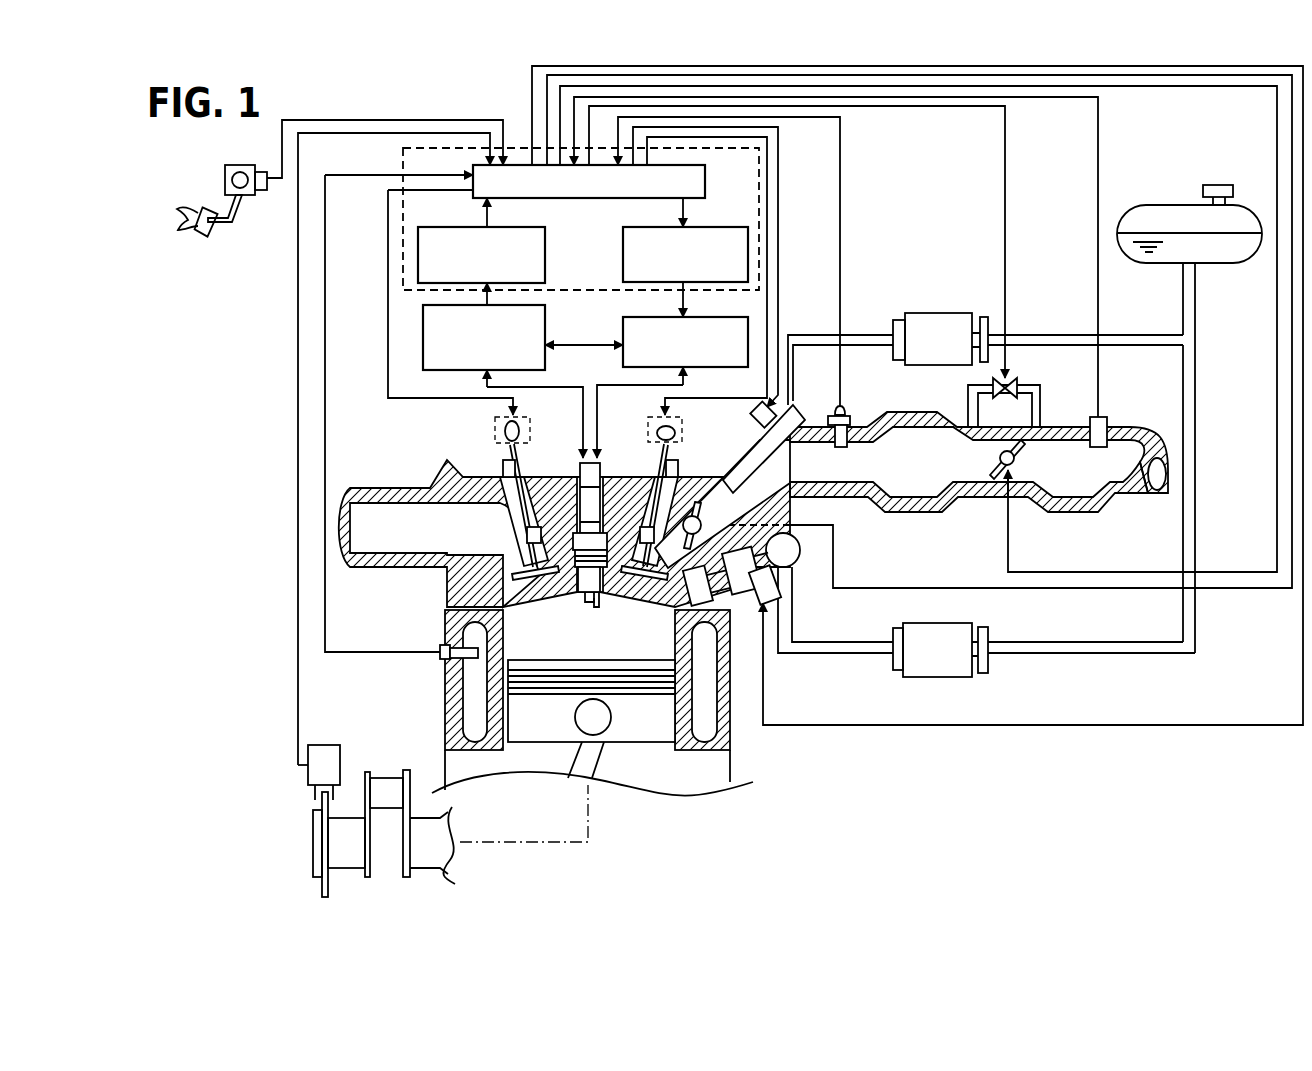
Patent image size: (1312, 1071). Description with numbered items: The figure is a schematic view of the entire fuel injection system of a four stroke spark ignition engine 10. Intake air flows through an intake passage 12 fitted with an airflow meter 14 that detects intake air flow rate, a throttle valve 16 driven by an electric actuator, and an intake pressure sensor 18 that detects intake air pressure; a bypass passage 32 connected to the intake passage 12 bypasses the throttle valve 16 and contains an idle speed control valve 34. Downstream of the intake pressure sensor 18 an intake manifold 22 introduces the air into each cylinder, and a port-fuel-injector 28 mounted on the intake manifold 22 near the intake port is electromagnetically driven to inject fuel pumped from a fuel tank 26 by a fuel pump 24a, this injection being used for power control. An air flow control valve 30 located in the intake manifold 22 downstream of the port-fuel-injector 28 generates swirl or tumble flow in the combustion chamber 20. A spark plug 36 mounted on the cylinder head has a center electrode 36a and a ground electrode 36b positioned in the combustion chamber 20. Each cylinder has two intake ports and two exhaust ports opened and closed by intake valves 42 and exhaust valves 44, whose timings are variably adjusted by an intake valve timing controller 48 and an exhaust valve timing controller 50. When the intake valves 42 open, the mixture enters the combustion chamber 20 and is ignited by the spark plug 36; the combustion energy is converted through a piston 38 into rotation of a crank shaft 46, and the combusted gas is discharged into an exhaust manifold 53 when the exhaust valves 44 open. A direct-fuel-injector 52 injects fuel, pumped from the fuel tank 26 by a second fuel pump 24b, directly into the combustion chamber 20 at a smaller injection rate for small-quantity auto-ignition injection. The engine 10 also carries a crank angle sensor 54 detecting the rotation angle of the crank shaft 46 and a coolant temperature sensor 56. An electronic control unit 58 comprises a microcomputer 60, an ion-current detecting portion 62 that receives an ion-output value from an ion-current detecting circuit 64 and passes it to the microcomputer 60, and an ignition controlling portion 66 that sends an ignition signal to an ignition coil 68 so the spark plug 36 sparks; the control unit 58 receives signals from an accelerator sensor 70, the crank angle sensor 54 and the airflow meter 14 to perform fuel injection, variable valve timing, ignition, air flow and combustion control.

The engine 10 is at (737, 807).
The intake passage 12 is at (915, 412).
The airflow meter 14 is at (1102, 417).
The throttle valve 16 is at (1013, 467).
The intake pressure sensor 18 is at (850, 413).
The combustion chamber 20 is at (520, 640).
The intake manifold 22 is at (783, 513).
The fuel pump 24a is at (927, 313).
The fuel pump 24b is at (927, 623).
The fuel tank 26 is at (1168, 205).
The port-fuel-injector 28 is at (793, 414).
The air flow control valve 30 is at (703, 475).
The bypass passage 32 is at (1042, 398).
The idle speed control valve 34 is at (1011, 380).
The spark plug 36 is at (580, 473).
The center electrode 36a is at (578, 600).
The ground electrode 36b is at (597, 603).
The piston 38 is at (613, 743).
The intake valves 42 is at (658, 451).
The exhaust valves 44 is at (510, 455).
The crank shaft 46 is at (342, 868).
The intake valve timing controller 48 is at (688, 420).
The exhaust valve timing controller 50 is at (495, 426).
The direct-fuel-injector 52 is at (777, 567).
The exhaust manifold 53 is at (447, 586).
The crank angle sensor 54 is at (322, 745).
The coolant temperature sensor 56 is at (445, 662).
The electronic control unit (ECU) 58 is at (608, 292).
The microcomputer 60 is at (705, 184).
The ion-current detecting portion 62 is at (497, 227).
The ion-current detecting circuit 64 is at (545, 340).
The ignition controlling portion 66 is at (700, 228).
The ignition coil 68 is at (706, 319).
The accelerator sensor 70 is at (259, 196).